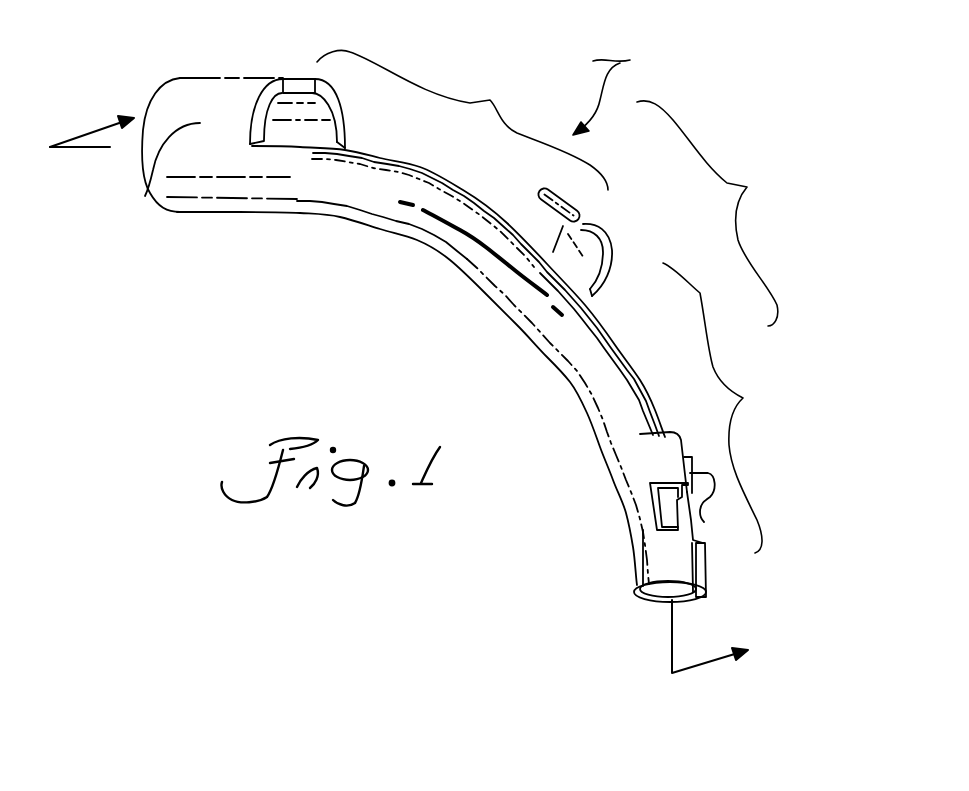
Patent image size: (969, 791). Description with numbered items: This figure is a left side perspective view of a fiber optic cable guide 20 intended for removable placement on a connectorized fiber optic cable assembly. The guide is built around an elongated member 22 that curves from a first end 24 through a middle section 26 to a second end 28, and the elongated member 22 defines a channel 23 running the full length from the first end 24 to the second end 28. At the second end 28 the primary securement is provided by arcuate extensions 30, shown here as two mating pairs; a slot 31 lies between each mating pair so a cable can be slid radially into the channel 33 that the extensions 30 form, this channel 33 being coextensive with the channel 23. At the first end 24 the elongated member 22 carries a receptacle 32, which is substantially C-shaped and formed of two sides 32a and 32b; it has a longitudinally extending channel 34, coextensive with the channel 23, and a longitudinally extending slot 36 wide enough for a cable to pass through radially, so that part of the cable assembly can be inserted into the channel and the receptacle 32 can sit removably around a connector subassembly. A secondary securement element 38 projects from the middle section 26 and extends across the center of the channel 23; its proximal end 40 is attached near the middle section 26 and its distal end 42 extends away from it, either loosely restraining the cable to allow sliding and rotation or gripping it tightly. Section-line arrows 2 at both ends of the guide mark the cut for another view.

The fiber optic cable guide 20 is at (601, 83).
The elongated member 22 is at (515, 320).
The channel 23 is at (420, 170).
The first end 24 is at (462, 120).
The middle section 26 is at (716, 213).
The second end 28 is at (728, 408).
The extension 30 is at (653, 458).
The slot 31 is at (688, 487).
The receptacle 32 is at (193, 64).
The side of receptacle 32a is at (146, 187).
The side of receptacle 32b is at (325, 80).
The channel 33 is at (666, 597).
The longitudinally-extending channel 34 is at (303, 132).
The longitudinally-extending slot 36 is at (293, 105).
The secondary securement element 38 is at (584, 224).
The proximal end 40 is at (590, 294).
The distal end 42 is at (560, 187).
The section line 2- 2 is at (402, 390).